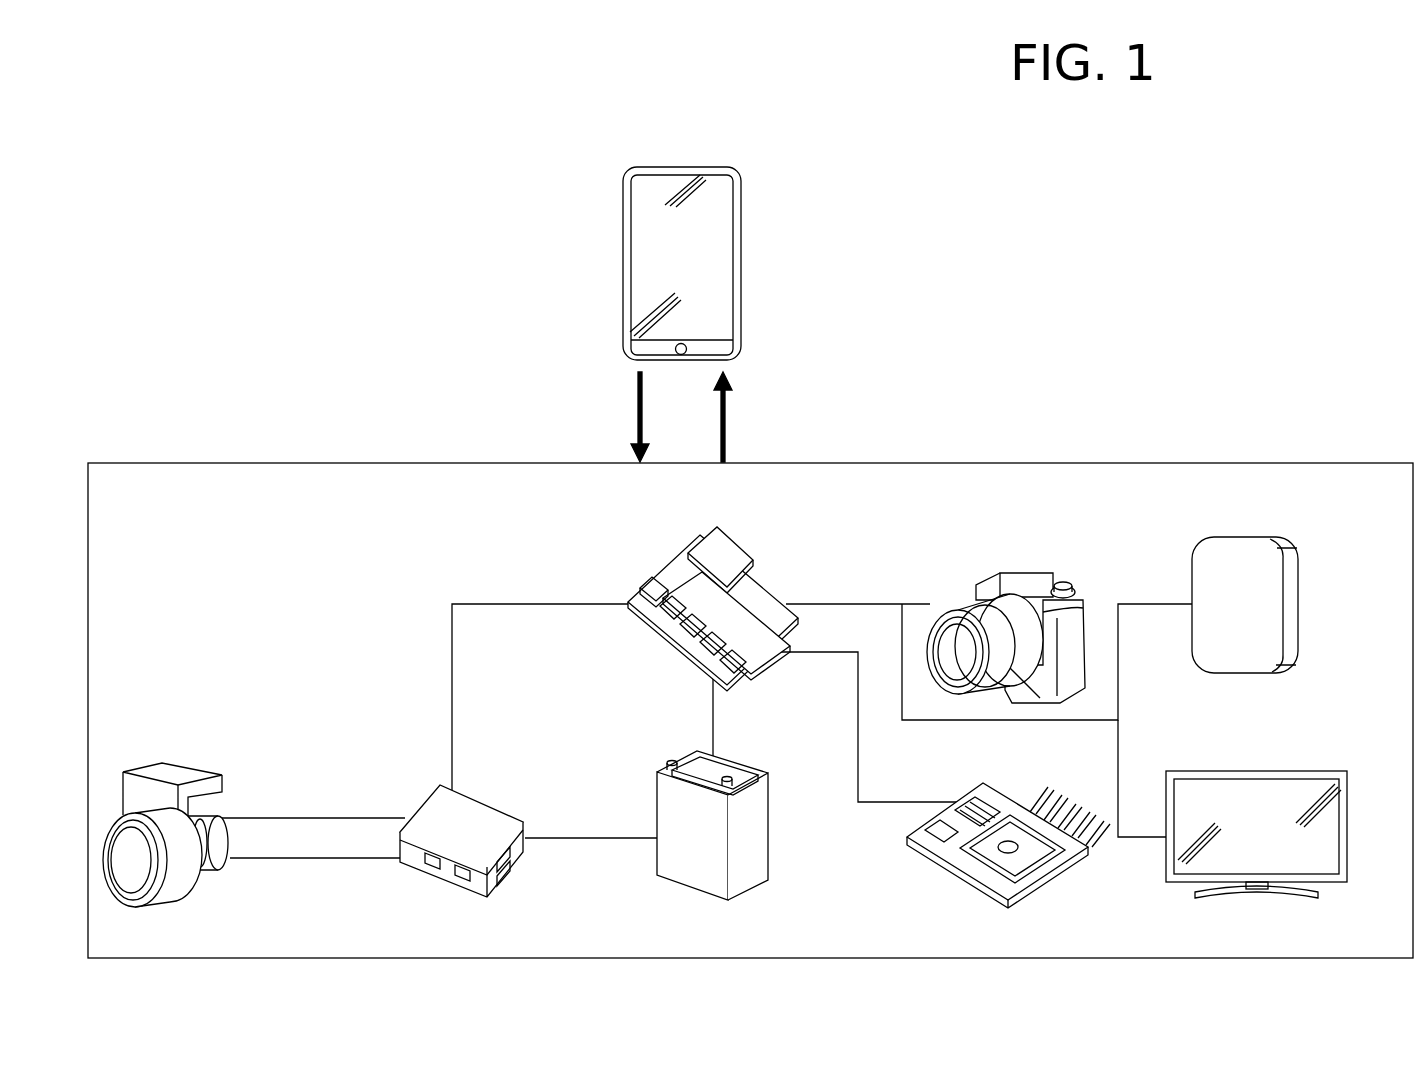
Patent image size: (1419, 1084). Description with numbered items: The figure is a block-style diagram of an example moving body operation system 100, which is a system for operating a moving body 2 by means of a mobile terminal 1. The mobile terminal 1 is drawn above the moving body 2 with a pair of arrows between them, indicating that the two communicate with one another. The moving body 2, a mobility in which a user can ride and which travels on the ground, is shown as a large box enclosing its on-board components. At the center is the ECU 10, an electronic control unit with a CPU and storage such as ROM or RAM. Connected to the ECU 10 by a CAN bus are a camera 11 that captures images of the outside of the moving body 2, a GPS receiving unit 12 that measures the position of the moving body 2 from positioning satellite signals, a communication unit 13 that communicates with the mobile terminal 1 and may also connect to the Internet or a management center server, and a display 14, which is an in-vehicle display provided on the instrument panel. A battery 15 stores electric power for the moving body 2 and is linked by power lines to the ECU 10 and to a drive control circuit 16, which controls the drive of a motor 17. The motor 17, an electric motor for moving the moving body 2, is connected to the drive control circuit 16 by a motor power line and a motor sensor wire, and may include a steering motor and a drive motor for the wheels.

The moving body operation system 100 is at (853, 152).
The mobile terminal 1 is at (750, 173).
The moving body 2 is at (345, 463).
The ECU 10 is at (767, 590).
The camera 11 is at (1028, 582).
The GPS receiving unit 12 is at (1000, 800).
The communication unit 13 is at (1272, 606).
The display 14 is at (1331, 820).
The battery 15 is at (760, 778).
The drive control circuit 16 is at (483, 812).
The motor 17 is at (192, 774).